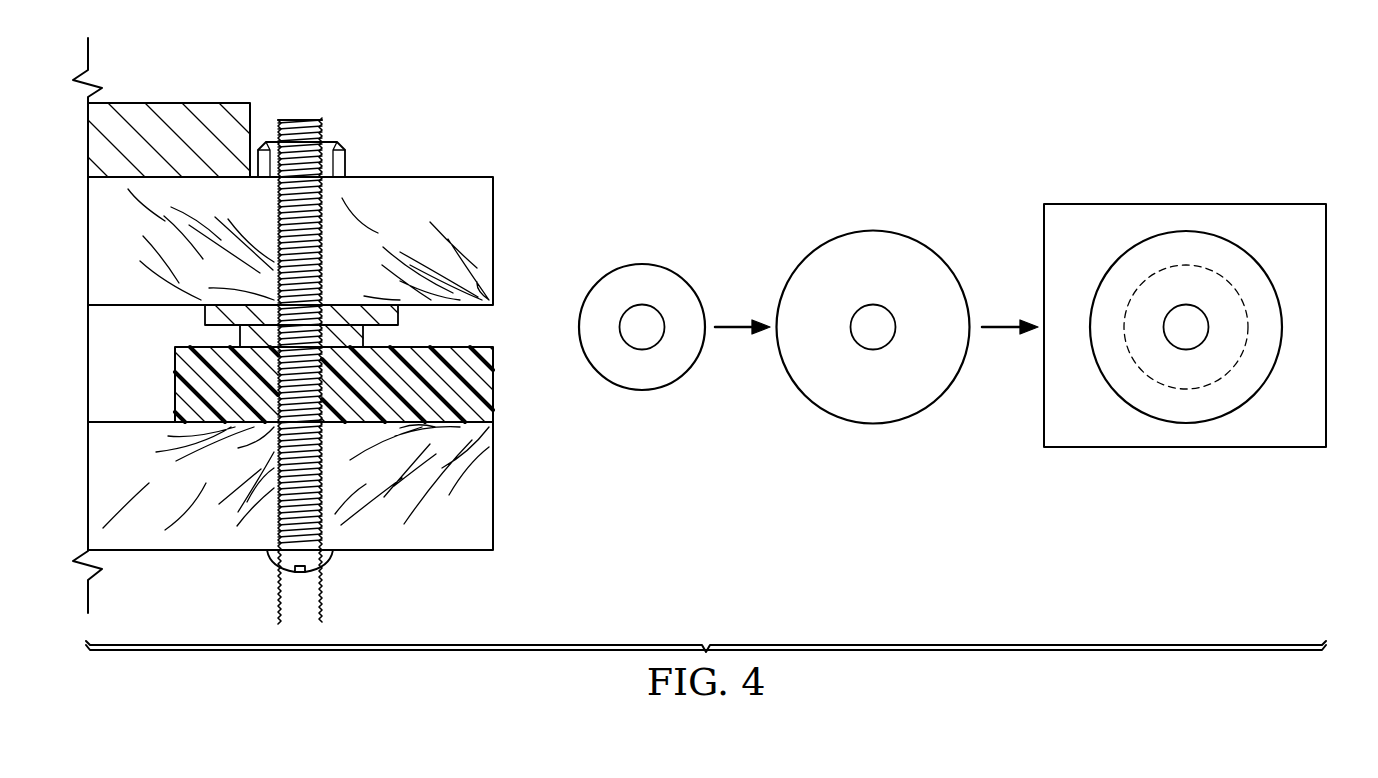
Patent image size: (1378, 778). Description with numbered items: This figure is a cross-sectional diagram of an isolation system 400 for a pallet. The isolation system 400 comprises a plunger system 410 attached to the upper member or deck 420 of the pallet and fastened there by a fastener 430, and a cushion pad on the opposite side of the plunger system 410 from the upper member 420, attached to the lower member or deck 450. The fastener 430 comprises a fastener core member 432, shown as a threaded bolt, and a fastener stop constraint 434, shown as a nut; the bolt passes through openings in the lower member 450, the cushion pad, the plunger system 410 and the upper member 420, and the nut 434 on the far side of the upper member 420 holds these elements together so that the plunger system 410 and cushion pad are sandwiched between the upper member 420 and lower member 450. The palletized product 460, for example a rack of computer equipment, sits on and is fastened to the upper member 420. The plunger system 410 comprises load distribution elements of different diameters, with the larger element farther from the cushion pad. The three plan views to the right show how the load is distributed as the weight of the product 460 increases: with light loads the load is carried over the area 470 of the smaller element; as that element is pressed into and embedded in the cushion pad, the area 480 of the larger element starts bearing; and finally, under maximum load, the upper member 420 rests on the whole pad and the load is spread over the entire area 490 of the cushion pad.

The isolation system 400 is at (487, 101).
The plunger system 410 is at (185, 327).
The upper member 420 is at (493, 240).
The fastener 430 is at (300, 120).
The fastener core member 432 is at (330, 205).
The fastener stop constraint 434 is at (333, 142).
The lower member 450 is at (493, 487).
The palletized product 460 is at (165, 103).
The area of the smaller load distribution element 470 is at (618, 375).
The area of the larger load distribution element 480 is at (843, 410).
The area of the cushion pad 490 is at (1104, 437).